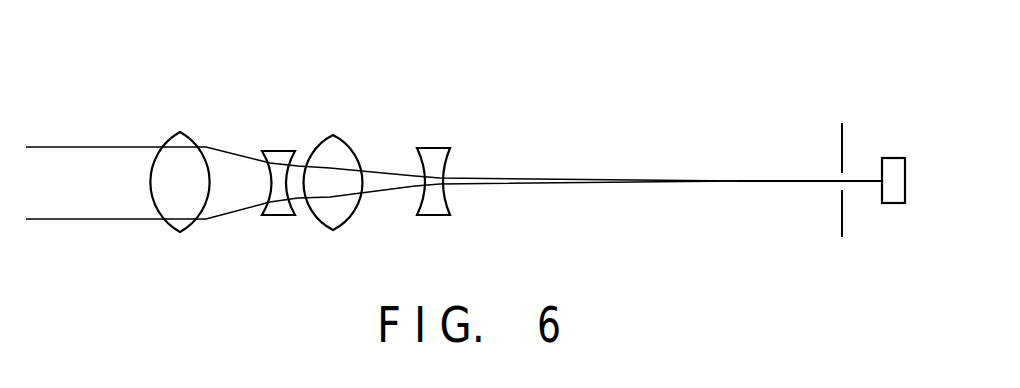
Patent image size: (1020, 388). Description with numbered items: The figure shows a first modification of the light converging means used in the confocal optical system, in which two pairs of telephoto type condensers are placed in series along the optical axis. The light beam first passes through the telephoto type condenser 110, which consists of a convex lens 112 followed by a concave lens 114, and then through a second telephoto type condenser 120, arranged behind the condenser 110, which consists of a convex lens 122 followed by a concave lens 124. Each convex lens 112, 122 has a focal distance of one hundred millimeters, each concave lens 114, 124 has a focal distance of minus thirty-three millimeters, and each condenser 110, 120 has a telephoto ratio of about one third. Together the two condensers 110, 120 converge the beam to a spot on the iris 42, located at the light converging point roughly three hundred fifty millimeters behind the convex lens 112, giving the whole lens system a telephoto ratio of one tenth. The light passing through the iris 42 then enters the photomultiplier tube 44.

The telephoto type condenser 110 is at (308, 85).
The convex lens 112 is at (180, 133).
The concave lens 114 is at (277, 152).
The telephoto type condenser 120 is at (337, 85).
The convex lens 122 is at (347, 137).
The concave lens 124 is at (437, 148).
The iris 42 is at (842, 140).
The photomultiplier tube 44 is at (890, 158).